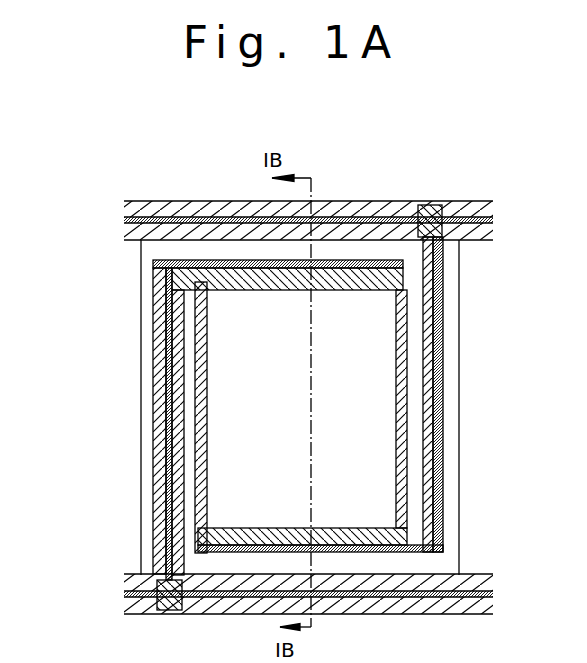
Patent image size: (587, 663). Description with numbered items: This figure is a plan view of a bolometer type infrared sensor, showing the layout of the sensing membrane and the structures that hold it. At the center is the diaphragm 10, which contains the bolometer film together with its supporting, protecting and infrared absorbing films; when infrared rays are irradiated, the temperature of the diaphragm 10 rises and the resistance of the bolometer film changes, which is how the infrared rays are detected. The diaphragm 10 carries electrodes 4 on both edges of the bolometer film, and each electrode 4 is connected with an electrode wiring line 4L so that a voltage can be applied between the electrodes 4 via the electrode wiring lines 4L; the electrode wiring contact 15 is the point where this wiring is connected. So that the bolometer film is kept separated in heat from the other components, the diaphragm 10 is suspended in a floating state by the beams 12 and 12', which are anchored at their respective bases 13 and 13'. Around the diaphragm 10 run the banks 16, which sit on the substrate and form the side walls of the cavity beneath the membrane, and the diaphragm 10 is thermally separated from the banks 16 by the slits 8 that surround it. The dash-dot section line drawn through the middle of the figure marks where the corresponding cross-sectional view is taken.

The electrode 4 is at (240, 550).
The electrode wiring line 4L is at (160, 498).
The slit 8 is at (415, 297).
The diaphragm 10 is at (372, 372).
The beam 12 is at (468, 394).
The beam 12' is at (119, 421).
The base of the beam 13 is at (320, 598).
The base of the beam 13' is at (274, 368).
The electrode wiring contact 15 is at (438, 205).
The bank 16 is at (385, 203).